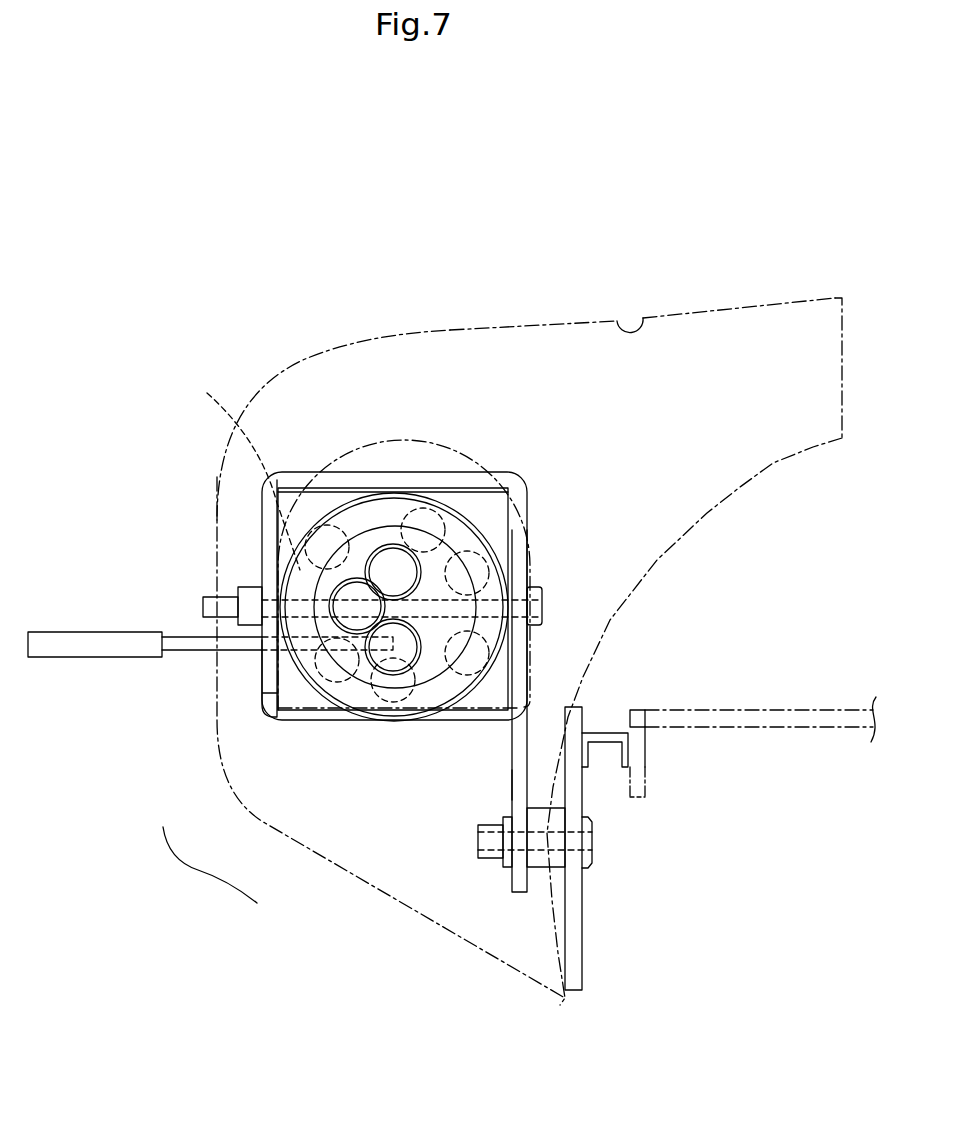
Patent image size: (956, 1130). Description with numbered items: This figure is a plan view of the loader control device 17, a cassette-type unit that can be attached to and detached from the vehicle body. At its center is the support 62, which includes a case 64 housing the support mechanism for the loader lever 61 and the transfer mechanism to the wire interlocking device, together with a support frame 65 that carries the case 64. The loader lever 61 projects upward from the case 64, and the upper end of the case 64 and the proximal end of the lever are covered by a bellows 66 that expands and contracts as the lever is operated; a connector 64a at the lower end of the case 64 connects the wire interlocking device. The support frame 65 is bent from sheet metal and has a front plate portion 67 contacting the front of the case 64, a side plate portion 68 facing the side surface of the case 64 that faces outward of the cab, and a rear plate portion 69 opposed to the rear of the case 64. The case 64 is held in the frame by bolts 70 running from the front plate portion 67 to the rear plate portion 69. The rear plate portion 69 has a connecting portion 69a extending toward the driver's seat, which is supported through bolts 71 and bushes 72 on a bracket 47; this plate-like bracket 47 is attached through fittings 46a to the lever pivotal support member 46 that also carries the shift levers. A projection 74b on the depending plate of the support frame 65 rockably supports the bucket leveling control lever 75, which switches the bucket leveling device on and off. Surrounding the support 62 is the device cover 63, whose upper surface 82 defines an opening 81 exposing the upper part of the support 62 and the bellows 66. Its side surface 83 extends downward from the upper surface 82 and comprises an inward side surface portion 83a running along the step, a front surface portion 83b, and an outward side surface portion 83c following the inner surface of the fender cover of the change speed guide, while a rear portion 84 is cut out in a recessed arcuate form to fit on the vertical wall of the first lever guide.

The loader control device 17 is at (255, 230).
The lever pivotal support member 46 is at (793, 710).
The fittings 46a is at (600, 732).
The bracket 47 is at (577, 958).
The loader lever 61 is at (357, 592).
The support 62 is at (209, 869).
The device cover 63 is at (712, 285).
The case 64 is at (302, 722).
The connector 64a is at (467, 678).
The support frame 65 is at (266, 675).
The bellows 66 is at (393, 705).
The front plate portion 67 is at (268, 560).
The side plate portion 68 is at (443, 478).
The rear plate portion 69 is at (527, 553).
The connecting portion 69a is at (513, 787).
The bolts 70 is at (203, 600).
The bolts 71 is at (477, 848).
The bushes 72 is at (535, 867).
The projection 74b is at (226, 467).
The bucket leveling control lever 75 is at (53, 652).
The opening 81 is at (468, 471).
The upper surface 82 is at (645, 313).
The side surface 83 is at (213, 675).
The inward side surface portion 83a is at (312, 857).
The front surface portion 83b is at (267, 390).
The outward side surface portion 83c is at (768, 302).
The rear portion 84 is at (743, 485).